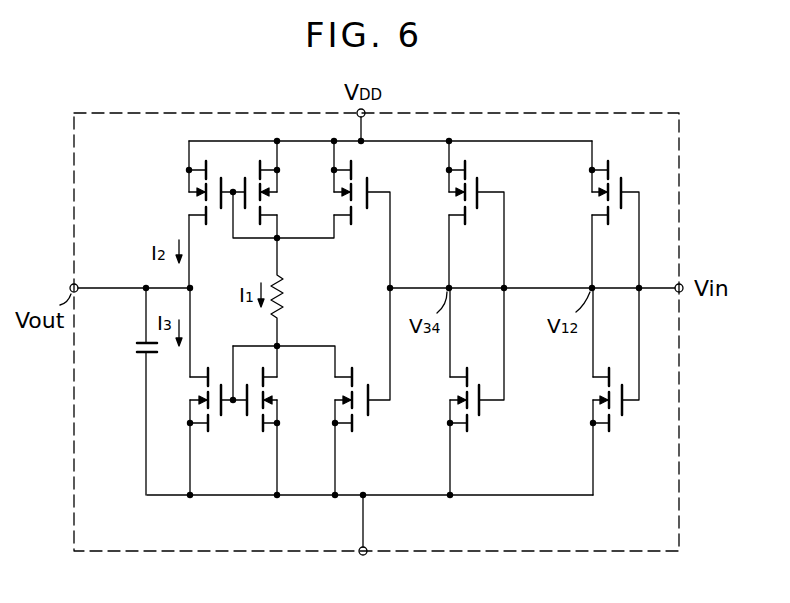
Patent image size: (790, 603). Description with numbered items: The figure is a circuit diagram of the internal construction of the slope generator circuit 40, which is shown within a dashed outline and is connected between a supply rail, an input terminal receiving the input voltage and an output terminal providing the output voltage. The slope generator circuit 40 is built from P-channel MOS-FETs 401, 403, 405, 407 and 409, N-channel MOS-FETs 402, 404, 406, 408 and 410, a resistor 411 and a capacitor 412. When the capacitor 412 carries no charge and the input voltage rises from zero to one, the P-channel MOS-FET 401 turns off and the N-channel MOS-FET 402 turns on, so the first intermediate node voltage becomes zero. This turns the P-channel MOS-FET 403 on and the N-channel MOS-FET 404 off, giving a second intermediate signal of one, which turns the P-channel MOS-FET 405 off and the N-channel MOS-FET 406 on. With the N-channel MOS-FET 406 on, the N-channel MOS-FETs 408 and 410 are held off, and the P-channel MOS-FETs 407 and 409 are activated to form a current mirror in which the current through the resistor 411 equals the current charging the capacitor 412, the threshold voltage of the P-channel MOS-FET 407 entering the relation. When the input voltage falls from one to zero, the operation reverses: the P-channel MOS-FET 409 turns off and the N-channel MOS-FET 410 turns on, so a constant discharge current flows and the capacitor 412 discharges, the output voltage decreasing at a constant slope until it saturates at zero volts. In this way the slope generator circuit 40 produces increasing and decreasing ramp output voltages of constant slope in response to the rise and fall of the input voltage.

The slope generator circuit 40 is at (679, 478).
The P-channel MOS-FET 401 is at (613, 173).
The N-channel MOS-FET 402 is at (615, 415).
The P-channel MOS-FET 403 is at (472, 173).
The N-channel MOS-FET 404 is at (475, 422).
The P-channel MOS-FET 405 is at (358, 183).
The N-channel MOS-FET 406 is at (360, 422).
The P-channel MOS-FET 407 is at (271, 203).
The N-channel MOS-FET 408 is at (277, 390).
The P-channel MOS-FET 409 is at (188, 181).
The N-channel MOS-FET 410 is at (215, 422).
The resistor 411 is at (284, 295).
The capacitor 412 is at (135, 350).